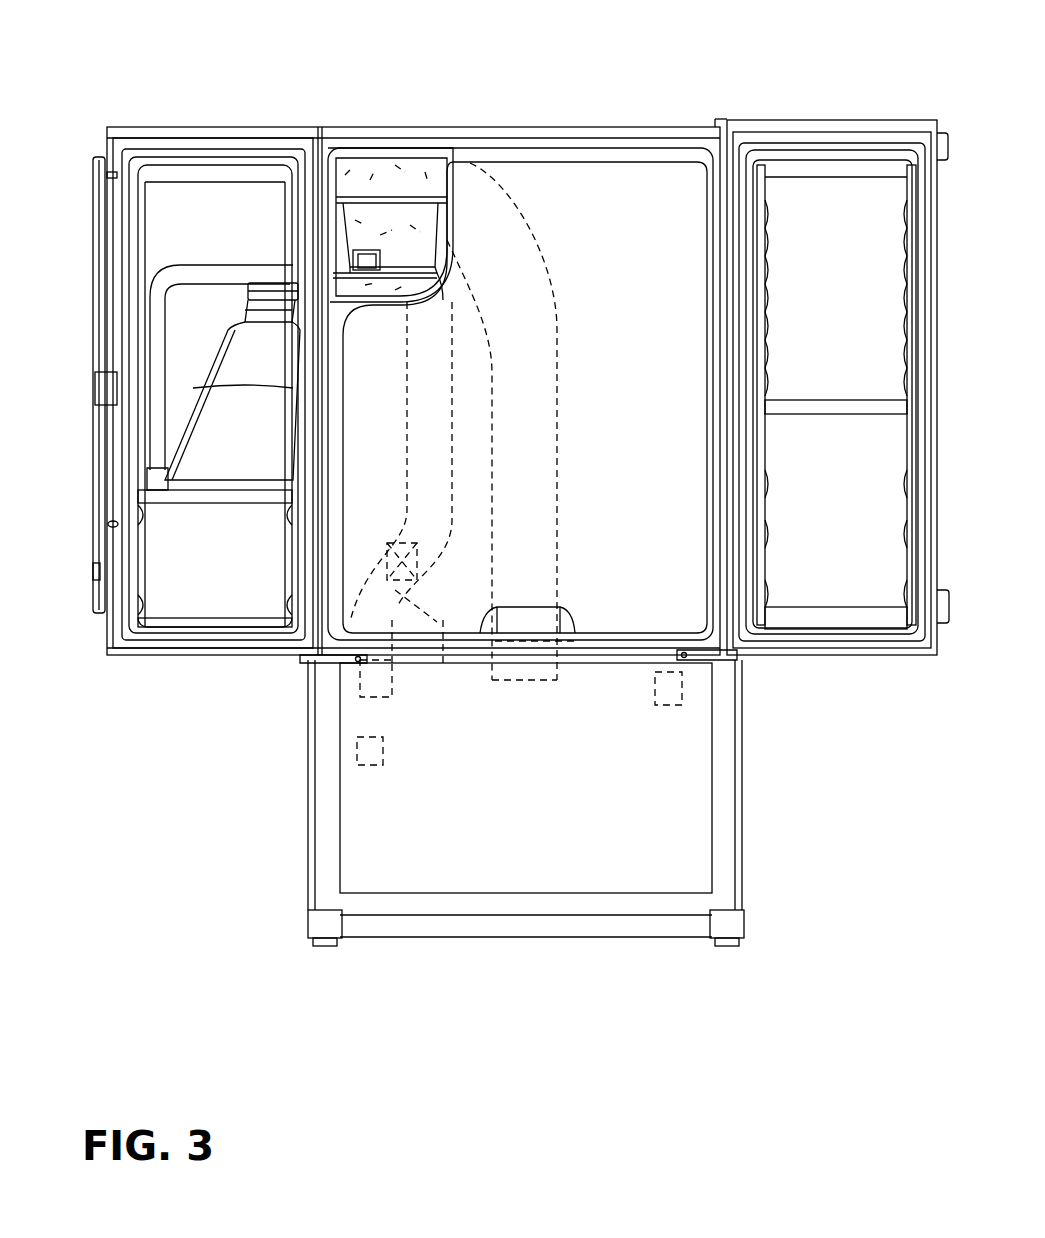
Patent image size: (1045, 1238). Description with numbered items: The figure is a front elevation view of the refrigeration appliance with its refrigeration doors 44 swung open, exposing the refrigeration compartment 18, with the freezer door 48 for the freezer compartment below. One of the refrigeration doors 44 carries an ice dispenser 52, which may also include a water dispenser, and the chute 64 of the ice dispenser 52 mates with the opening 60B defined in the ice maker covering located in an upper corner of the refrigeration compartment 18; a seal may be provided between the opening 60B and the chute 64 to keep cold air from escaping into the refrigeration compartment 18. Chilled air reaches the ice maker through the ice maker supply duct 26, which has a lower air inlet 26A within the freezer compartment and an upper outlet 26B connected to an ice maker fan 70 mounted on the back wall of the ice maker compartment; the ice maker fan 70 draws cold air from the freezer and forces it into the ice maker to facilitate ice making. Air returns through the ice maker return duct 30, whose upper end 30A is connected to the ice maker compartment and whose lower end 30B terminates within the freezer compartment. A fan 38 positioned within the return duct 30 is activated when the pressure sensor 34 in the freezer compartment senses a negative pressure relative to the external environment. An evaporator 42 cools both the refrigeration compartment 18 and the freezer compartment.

The refrigeration compartment 18 is at (585, 190).
The refrigeration doors 44 is at (347, 247).
The ice maker fan 70 is at (390, 135).
The upper end 30A is at (413, 257).
The opening 60B is at (195, 200).
The chute 64 is at (263, 297).
The ice dispenser 52 is at (247, 350).
The upper outlet 26B is at (420, 143).
The ice maker supply duct 26 is at (527, 372).
The lower air inlet 26A is at (512, 672).
The ice maker return duct 30 is at (408, 392).
The fan 38 is at (443, 622).
The lower end 30B is at (345, 683).
The pressure sensor 34 is at (365, 762).
The evaporator 42 is at (687, 710).
The freezer door 48 is at (586, 798).